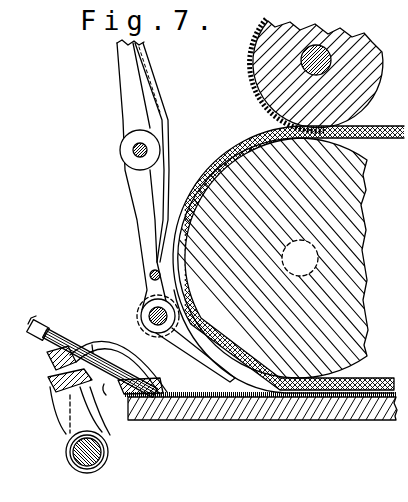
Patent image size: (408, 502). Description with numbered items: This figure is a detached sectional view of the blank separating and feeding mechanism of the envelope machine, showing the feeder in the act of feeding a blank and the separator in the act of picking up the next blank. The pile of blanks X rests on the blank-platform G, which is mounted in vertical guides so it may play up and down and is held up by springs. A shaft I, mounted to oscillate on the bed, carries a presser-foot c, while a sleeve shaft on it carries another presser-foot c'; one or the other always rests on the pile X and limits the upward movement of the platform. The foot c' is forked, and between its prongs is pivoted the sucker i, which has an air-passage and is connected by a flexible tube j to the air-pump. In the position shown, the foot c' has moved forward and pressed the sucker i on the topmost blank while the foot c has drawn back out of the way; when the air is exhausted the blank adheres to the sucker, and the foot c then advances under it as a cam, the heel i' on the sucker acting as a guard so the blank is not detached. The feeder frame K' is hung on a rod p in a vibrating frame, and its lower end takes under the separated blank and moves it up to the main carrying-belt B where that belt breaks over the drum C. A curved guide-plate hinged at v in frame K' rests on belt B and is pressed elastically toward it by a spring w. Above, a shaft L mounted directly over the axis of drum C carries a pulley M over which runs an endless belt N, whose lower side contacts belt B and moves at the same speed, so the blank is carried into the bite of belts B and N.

The pulley M is at (371, 78).
The shaft L is at (316, 45).
The endless belt N is at (252, 80).
The main endless carrying-belt B is at (380, 141).
The roller or drum C is at (362, 311).
The spring w is at (158, 124).
The rod p is at (133, 150).
The frame K' is at (172, 211).
The hinge v is at (150, 275).
The blank-platform G is at (262, 251).
The pile of blanks X is at (181, 399).
The presser-foot c' is at (118, 368).
The presser-foot c is at (105, 359).
The heel i' is at (138, 397).
The sucker i is at (108, 391).
The flexible tube j is at (92, 353).
The shaft I is at (72, 446).